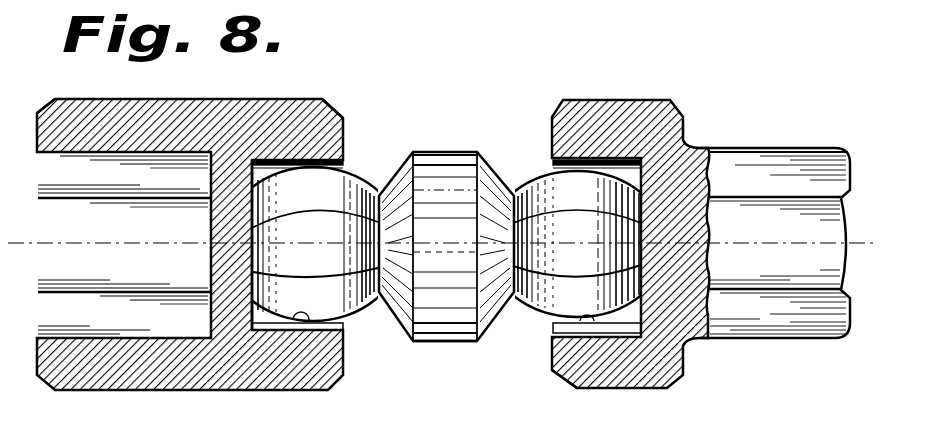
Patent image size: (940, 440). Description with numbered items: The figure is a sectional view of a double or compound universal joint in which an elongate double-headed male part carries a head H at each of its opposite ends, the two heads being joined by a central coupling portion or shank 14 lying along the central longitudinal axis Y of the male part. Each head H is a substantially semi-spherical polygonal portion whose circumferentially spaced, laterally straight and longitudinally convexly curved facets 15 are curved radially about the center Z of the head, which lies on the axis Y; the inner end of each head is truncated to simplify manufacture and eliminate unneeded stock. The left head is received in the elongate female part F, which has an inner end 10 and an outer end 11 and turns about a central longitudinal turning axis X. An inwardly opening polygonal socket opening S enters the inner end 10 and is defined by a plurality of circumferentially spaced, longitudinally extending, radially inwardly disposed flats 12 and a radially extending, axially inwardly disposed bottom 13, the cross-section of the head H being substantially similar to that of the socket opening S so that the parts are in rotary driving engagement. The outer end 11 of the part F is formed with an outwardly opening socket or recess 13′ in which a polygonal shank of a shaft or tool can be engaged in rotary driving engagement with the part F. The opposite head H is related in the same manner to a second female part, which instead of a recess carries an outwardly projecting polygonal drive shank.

The female part F is at (246, 98).
The outer end 11 is at (37, 114).
The socket or recess 13′ is at (124, 245).
The bottom 13 is at (262, 257).
The central longitudinal turning axis X is at (96, 244).
The facets 15 is at (322, 166).
The head H is at (354, 167).
The socket opening S is at (446, 222).
The center of the head Z is at (313, 246).
The flats 12 is at (301, 320).
The inner end 10 is at (347, 121).
The central longitudinal axis Y is at (448, 246).
The shank 14 is at (444, 332).